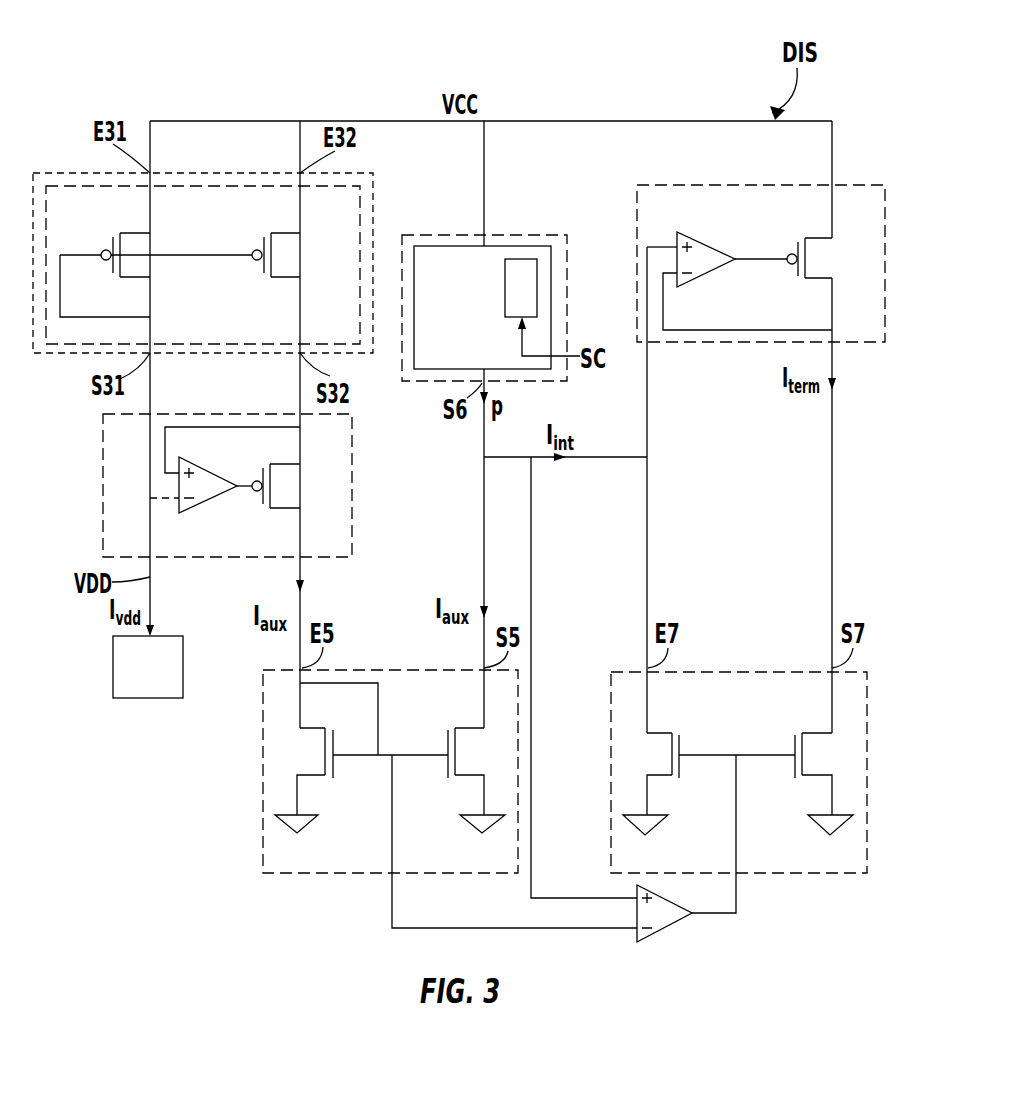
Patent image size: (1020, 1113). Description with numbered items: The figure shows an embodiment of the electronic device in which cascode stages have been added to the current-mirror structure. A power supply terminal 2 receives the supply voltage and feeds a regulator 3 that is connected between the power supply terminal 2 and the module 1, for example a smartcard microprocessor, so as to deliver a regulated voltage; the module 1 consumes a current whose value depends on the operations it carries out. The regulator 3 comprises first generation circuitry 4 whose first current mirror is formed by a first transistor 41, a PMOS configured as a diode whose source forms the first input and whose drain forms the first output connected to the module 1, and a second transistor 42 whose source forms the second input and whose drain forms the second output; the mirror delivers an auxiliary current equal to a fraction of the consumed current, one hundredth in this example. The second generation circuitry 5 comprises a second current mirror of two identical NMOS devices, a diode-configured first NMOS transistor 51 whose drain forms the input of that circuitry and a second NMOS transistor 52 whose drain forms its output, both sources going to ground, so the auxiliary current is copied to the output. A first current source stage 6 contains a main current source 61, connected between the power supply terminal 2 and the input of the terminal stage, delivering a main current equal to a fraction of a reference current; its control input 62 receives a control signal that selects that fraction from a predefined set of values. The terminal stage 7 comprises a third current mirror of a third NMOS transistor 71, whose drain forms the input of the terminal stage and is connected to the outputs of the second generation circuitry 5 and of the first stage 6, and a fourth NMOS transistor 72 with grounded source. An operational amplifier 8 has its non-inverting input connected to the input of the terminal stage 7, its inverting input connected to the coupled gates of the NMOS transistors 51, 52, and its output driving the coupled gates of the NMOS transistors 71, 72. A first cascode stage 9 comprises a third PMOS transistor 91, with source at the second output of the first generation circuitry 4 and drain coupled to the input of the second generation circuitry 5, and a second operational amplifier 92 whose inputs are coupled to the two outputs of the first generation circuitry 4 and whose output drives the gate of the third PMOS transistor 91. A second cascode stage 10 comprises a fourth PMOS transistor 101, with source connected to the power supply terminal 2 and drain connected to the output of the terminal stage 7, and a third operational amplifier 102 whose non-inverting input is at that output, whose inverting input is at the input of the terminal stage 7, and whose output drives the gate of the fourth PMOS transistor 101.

The module 1 is at (113, 667).
The power supply terminal 2 is at (150, 118).
The regulator 3 is at (61, 172).
The first generation circuitry 4 is at (214, 185).
The second generation circuitry 5 is at (393, 668).
The first current source stage 6 is at (567, 258).
The terminal stage 7 is at (740, 668).
The operational amplifier 8 is at (667, 942).
The first cascode stage 9 is at (103, 488).
The second cascode stage 10 is at (765, 185).
The first transistor 41 is at (158, 262).
The second transistor 42 is at (307, 266).
The first NMOS transistor 51 is at (292, 752).
The second NMOS transistor 52 is at (486, 752).
The main current source 61 is at (551, 305).
The control input 62 is at (505, 285).
The third NMOS transistor 71 is at (642, 760).
The fourth NMOS transistor 72 is at (832, 760).
The third PMOS transistor 91 is at (308, 494).
The second operational amplifier 92 is at (218, 508).
The fourth PMOS transistor 101 is at (840, 266).
The third operational amplifier 102 is at (710, 243).